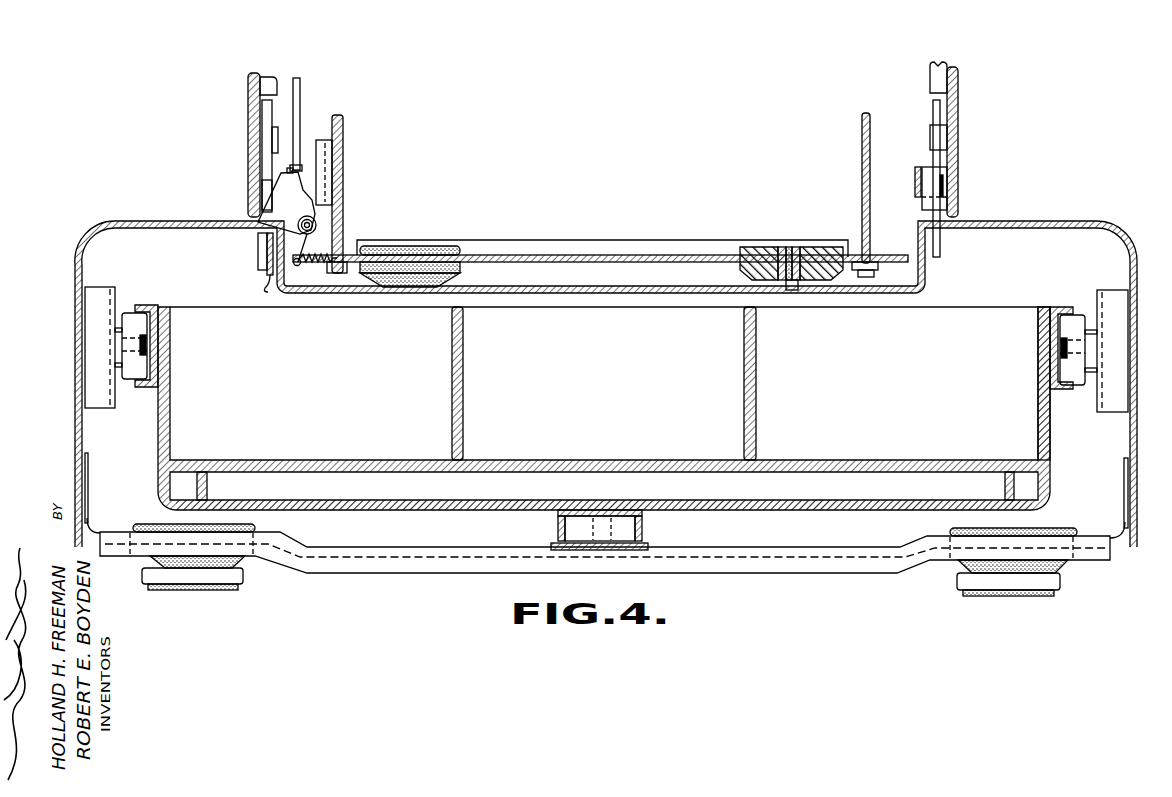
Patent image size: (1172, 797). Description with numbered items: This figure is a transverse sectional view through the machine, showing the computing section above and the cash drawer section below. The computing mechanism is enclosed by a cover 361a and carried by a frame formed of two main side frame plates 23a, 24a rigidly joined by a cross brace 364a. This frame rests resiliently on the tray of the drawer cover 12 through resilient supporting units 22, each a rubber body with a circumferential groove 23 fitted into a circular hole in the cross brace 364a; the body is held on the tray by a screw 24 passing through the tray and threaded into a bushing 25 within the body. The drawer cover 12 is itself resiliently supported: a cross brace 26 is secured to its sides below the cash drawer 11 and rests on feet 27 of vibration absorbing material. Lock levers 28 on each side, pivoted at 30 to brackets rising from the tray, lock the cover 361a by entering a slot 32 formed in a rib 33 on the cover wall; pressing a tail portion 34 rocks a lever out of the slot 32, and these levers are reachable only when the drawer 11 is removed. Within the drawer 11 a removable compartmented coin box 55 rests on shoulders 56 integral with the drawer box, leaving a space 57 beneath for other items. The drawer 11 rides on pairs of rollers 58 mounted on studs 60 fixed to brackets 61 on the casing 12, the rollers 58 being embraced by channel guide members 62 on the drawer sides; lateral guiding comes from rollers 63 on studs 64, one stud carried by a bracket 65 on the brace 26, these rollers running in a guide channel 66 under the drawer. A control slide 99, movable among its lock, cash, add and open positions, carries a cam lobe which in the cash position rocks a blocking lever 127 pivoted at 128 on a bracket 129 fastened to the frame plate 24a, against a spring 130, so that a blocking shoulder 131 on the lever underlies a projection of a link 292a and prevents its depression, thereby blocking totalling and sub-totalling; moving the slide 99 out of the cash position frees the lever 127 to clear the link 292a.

The cash drawer 11 is at (1065, 459).
The drawer cover 12 is at (1015, 223).
The resilient supporting unit 22 is at (432, 247).
The circumferential groove 23 is at (758, 249).
The main side frame plate 23a is at (862, 158).
The screw 24 is at (791, 292).
The main side frame plate 24a is at (343, 177).
The bushing 25 is at (780, 249).
The cross brace 26 is at (875, 573).
The foot 27 is at (958, 570).
The lock lever 28 is at (262, 127).
The pivot 30 is at (250, 186).
The slot 32 is at (277, 93).
The rib 33 is at (268, 77).
The tail portion 34 is at (260, 243).
The compartmented coin box 55 is at (843, 384).
The shoulder 56 is at (1005, 482).
The space 57 is at (850, 499).
The roller 58 is at (133, 379).
The stud 60 is at (1037, 352).
The bracket 61 is at (86, 326).
The channel guide member 62 is at (150, 306).
The roller 63 is at (642, 535).
The stud 64 is at (620, 502).
The bracket 65 is at (605, 550).
The guide channel 66 is at (559, 527).
The control slide 99 is at (265, 288).
The blocking lever 127 is at (278, 203).
The pivot 128 is at (316, 222).
The bracket 129 is at (323, 198).
The spring 130 is at (303, 265).
The blocking shoulder 131 is at (303, 167).
The link 292a is at (298, 107).
The cover 361a is at (960, 157).
The cross brace 364a is at (643, 254).